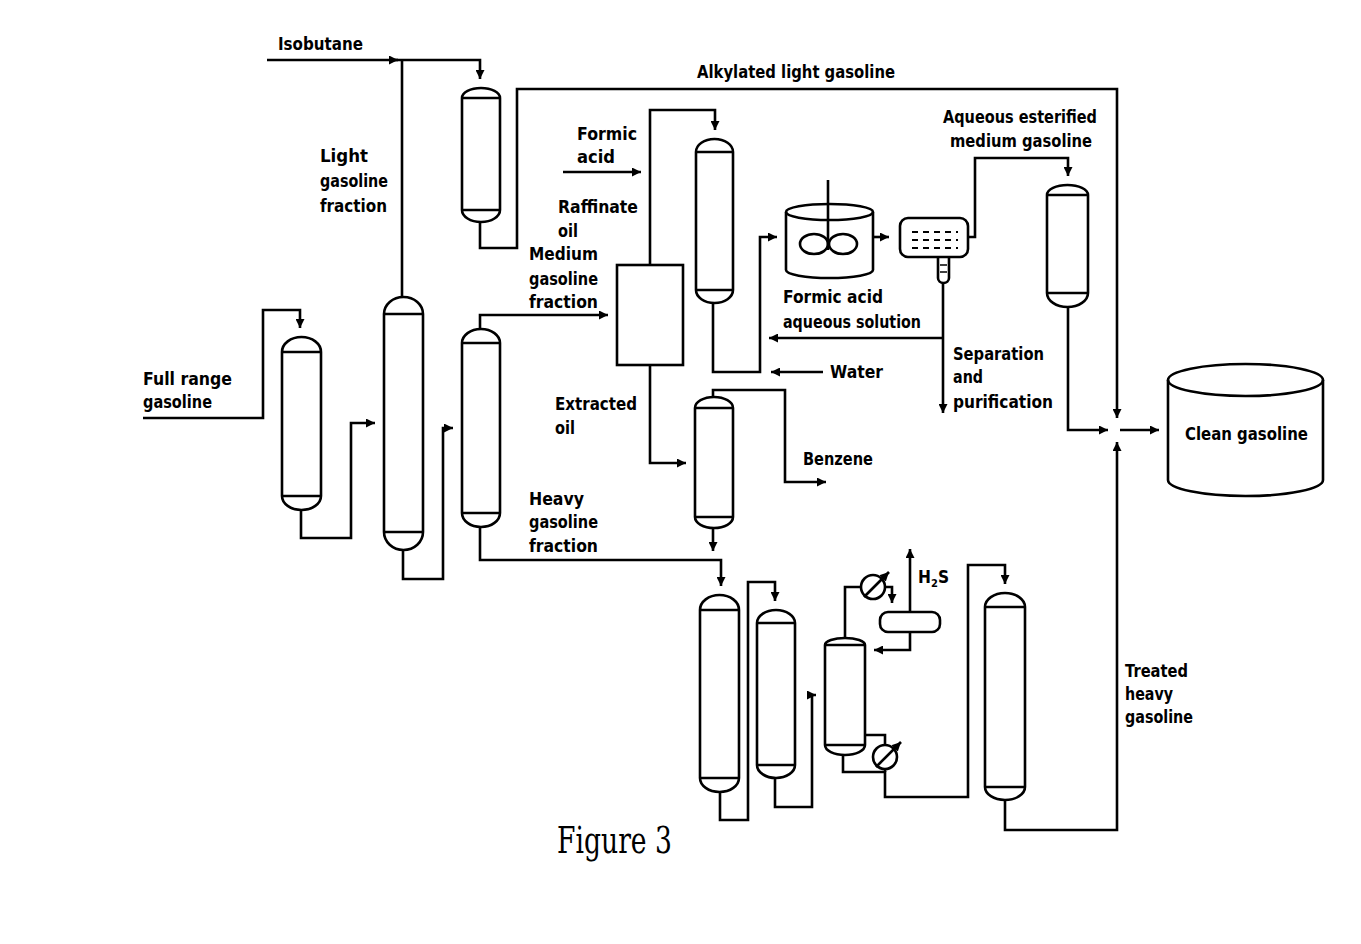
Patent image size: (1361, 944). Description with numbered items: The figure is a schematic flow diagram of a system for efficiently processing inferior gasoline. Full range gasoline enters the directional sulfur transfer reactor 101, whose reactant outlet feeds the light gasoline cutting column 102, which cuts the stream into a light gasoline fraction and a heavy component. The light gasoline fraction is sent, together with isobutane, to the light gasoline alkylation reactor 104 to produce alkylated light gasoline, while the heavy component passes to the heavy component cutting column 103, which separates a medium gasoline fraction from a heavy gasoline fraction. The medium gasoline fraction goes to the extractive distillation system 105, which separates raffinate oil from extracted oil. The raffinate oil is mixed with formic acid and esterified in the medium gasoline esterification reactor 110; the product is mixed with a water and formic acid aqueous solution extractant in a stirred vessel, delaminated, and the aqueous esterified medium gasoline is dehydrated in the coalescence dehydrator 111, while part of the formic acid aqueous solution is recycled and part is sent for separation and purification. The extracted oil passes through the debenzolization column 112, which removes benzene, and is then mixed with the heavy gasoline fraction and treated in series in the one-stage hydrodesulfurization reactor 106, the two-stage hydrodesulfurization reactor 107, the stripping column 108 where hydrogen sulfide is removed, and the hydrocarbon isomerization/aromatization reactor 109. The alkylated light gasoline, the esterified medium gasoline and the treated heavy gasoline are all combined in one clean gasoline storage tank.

The directional sulfur transfer reactor 101 is at (301, 423).
The light gasoline cutting column 102 is at (403, 423).
The heavy component cutting column 103 is at (481, 428).
The light gasoline alkylation reactor 104 is at (481, 155).
The extractive distillation system 105 is at (650, 315).
The one-stage hydrodesulfurization reactor 106 is at (719, 693).
The two-stage hydrodesulfurization reactor 107 is at (776, 694).
The stripping column 108 is at (845, 696).
The hydrocarbon isomerization/aromatization reactor 109 is at (1005, 696).
The medium gasoline esterification reactor 110 is at (714, 221).
The coalescence dehydrator 111 is at (1067, 246).
The debenzolization column 112 is at (714, 462).